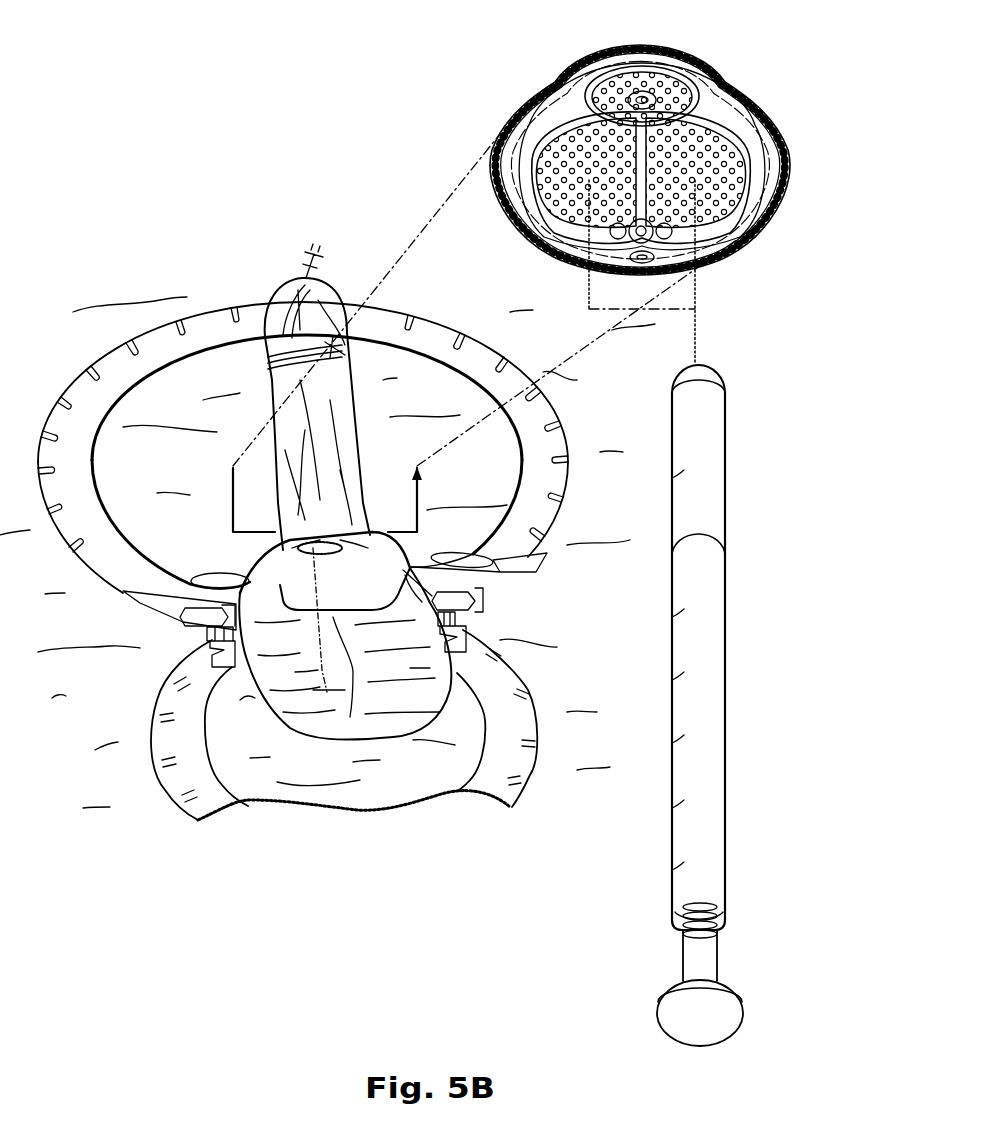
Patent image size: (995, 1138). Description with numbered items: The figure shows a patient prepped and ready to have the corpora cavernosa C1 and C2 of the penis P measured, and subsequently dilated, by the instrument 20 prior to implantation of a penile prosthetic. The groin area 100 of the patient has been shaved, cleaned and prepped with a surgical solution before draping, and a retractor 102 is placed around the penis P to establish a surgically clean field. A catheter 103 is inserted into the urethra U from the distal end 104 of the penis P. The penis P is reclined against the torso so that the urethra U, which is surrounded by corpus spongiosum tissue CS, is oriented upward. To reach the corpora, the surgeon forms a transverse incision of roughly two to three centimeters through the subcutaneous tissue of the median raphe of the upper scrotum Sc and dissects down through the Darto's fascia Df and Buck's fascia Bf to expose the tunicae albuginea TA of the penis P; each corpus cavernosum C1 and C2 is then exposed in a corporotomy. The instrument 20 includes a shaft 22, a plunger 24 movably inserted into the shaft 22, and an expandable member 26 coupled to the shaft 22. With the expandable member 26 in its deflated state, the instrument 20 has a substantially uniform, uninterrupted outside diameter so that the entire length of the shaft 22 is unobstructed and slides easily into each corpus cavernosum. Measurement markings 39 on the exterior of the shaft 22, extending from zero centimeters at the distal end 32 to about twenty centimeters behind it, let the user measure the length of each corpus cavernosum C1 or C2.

The groin area 100 is at (420, 422).
The retractor 102 is at (95, 372).
The catheter 103 is at (310, 272).
The distal end of the penis 104 is at (338, 293).
The penis P is at (267, 370).
The urethra U is at (322, 552).
The corpus cavernosum C1 is at (312, 550).
The corpus cavernosum C2 is at (378, 560).
The corpus spongiosum CS is at (686, 98).
The tunicae albuginea TA is at (545, 135).
The Buck's fascia Bf is at (540, 200).
The Darto's fascia Df is at (545, 222).
The scrotum Sc is at (437, 697).
The instrument 20 is at (715, 685).
The shaft 22 is at (712, 660).
The plunger 24 is at (735, 991).
The expandable member 26 is at (685, 468).
The distal end 32 is at (712, 370).
The measurement markings 39 is at (676, 556).